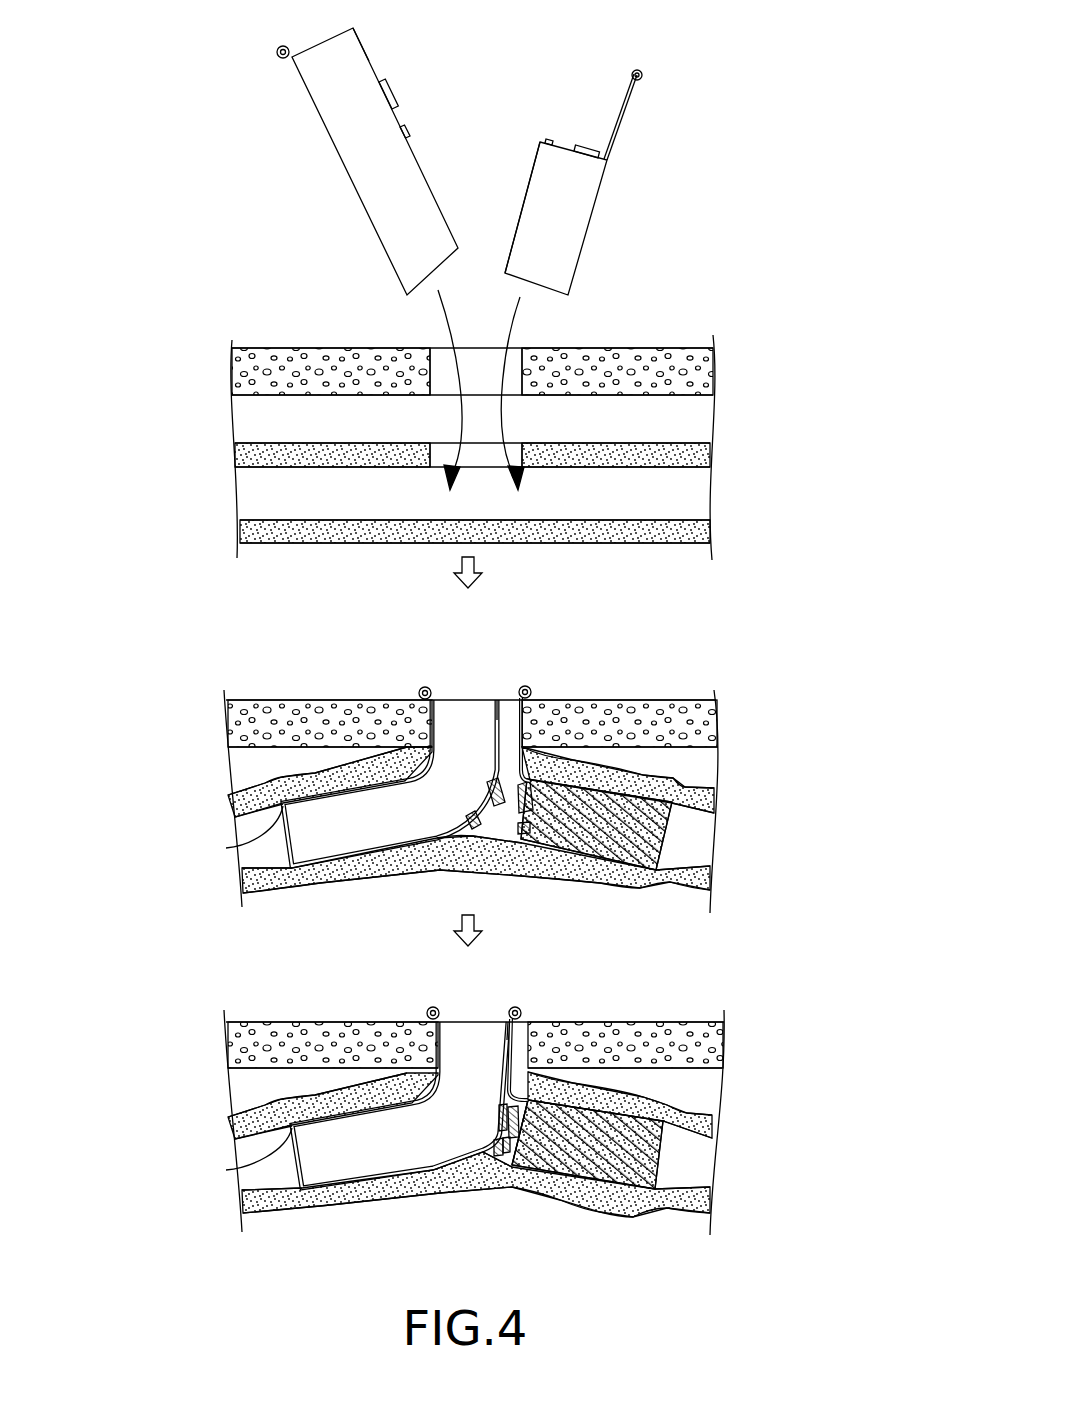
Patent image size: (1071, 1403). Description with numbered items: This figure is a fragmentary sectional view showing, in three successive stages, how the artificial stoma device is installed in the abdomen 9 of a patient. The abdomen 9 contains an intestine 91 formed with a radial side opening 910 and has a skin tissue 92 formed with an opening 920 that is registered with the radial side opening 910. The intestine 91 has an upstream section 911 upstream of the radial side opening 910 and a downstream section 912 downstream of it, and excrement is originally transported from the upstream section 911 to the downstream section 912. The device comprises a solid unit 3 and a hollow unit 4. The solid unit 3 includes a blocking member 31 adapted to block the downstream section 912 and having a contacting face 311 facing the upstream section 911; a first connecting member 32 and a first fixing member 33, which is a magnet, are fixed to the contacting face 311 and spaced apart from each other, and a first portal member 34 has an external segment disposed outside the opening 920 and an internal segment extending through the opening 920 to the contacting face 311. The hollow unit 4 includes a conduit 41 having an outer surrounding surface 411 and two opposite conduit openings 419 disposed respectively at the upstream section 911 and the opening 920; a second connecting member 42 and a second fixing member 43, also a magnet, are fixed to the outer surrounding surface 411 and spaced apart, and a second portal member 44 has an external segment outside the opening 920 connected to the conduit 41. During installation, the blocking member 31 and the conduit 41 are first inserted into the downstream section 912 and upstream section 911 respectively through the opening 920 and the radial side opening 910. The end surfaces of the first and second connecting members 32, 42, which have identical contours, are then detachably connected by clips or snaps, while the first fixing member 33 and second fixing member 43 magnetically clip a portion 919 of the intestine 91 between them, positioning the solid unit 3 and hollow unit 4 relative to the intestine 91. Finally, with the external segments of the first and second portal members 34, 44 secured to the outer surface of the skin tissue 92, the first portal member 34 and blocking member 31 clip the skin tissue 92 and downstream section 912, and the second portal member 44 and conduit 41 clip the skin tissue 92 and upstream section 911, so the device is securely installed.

The solid unit 3 is at (626, 657).
The blocking member 31 is at (575, 242).
The contacting face 311 is at (545, 138).
The first connecting member 32 is at (595, 146).
The first fixing member 33 is at (556, 138).
The first portal member 34 is at (643, 74).
The hollow unit 4 is at (363, 616).
The conduit 41 is at (350, 200).
The outer surrounding surface 411 is at (372, 60).
The conduit openings 419 is at (467, 700).
The second connecting member 42 is at (393, 93).
The second fixing member 43 is at (408, 130).
The second portal member 44 is at (276, 52).
The abdomen 9 is at (483, 770).
The intestine 91 is at (429, 828).
The radial side opening 910 is at (435, 455).
The upstream section 911 is at (280, 545).
The downstream section 912 is at (580, 535).
The portion of the intestine 919 is at (498, 1131).
The skin tissue 92 is at (716, 372).
The opening 920 is at (430, 370).